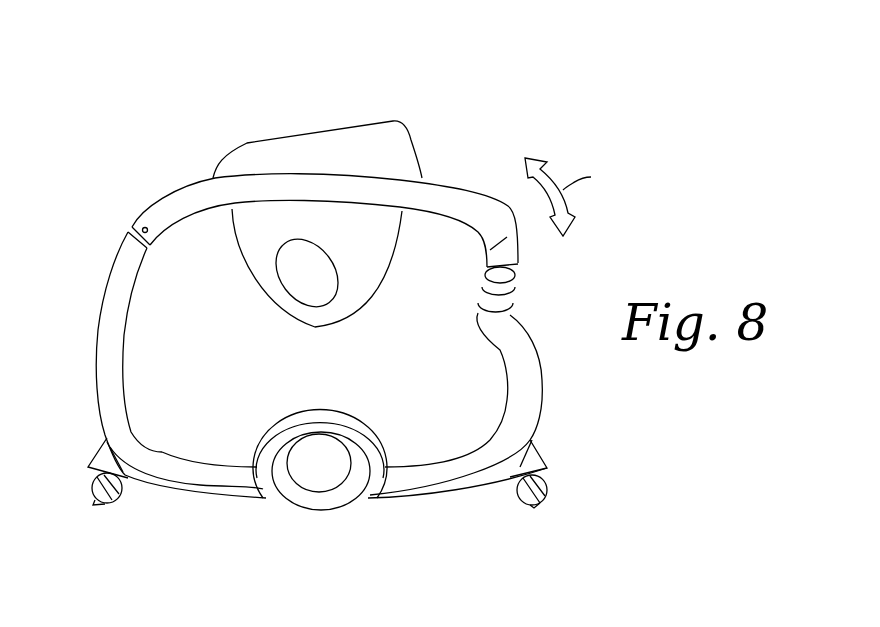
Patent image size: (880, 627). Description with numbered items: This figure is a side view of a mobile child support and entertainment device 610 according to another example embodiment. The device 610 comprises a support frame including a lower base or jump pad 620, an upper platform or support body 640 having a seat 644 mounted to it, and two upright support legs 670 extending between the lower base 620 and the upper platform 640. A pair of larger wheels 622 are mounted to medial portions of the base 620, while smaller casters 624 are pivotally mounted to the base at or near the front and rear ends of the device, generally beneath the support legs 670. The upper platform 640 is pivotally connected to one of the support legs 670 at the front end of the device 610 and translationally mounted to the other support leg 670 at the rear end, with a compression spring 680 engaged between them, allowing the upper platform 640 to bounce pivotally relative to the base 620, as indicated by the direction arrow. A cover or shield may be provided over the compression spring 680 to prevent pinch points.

The mobile child support and entertainment device 610 is at (170, 108).
The lower base or jump pad 620 is at (208, 472).
The larger wheels 622 is at (318, 498).
The casters 624 is at (117, 496).
The upper platform or support body 640 is at (182, 204).
The seat 644 is at (322, 150).
The upright support legs 670 is at (117, 385).
The compression spring 680 is at (517, 298).